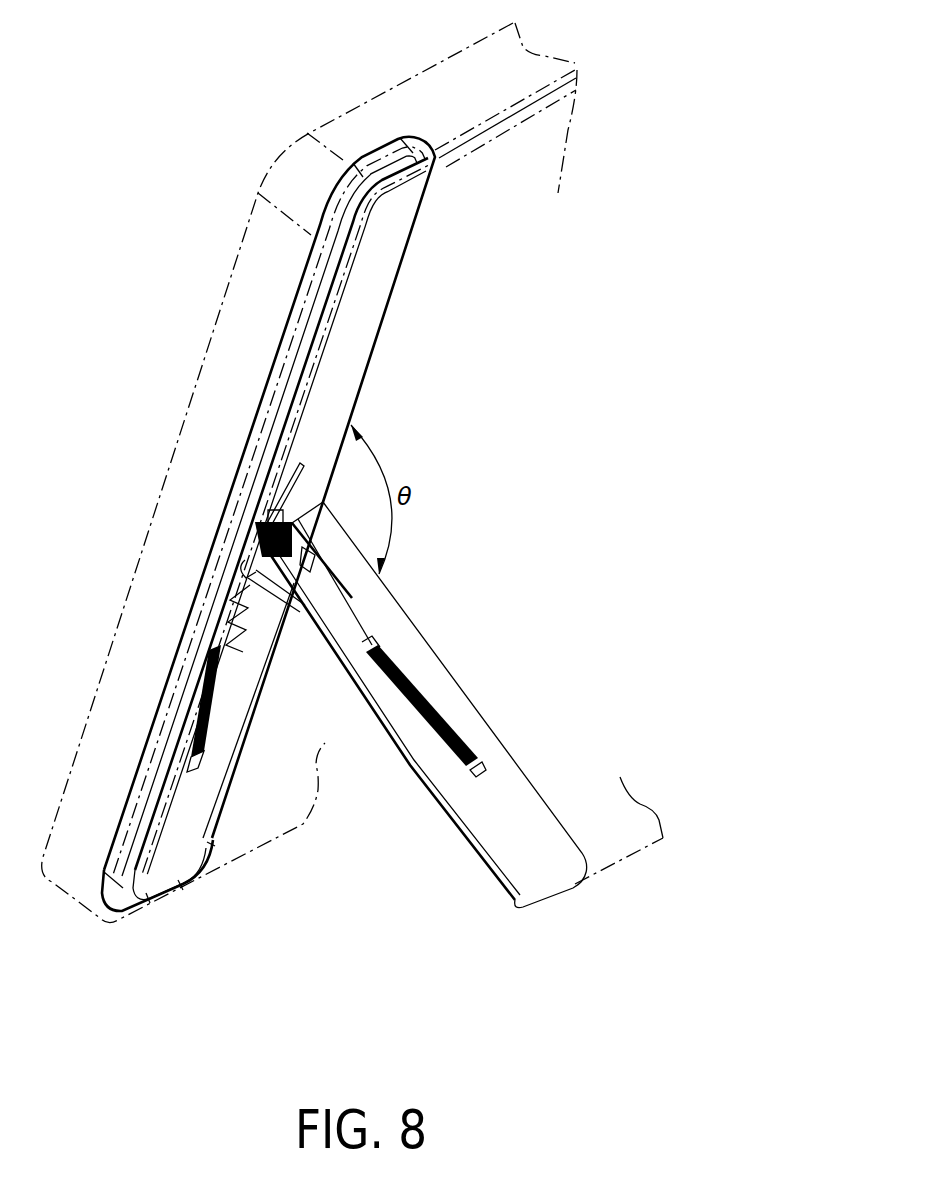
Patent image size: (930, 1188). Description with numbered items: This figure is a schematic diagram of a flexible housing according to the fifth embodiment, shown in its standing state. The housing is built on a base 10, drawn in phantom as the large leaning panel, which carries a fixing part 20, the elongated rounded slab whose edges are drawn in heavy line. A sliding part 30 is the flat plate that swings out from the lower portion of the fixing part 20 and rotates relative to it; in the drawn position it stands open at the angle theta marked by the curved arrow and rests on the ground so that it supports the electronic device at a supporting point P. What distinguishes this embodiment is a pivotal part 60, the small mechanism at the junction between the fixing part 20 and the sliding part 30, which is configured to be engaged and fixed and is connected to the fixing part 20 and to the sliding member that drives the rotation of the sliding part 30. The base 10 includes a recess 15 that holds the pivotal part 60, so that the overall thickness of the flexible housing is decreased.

The base 10 is at (207, 361).
The fixing part 20 is at (352, 357).
The recess 15 is at (233, 583).
The pivotal part 60 is at (263, 520).
The sliding part 30 is at (472, 707).
The supporting point P is at (557, 893).